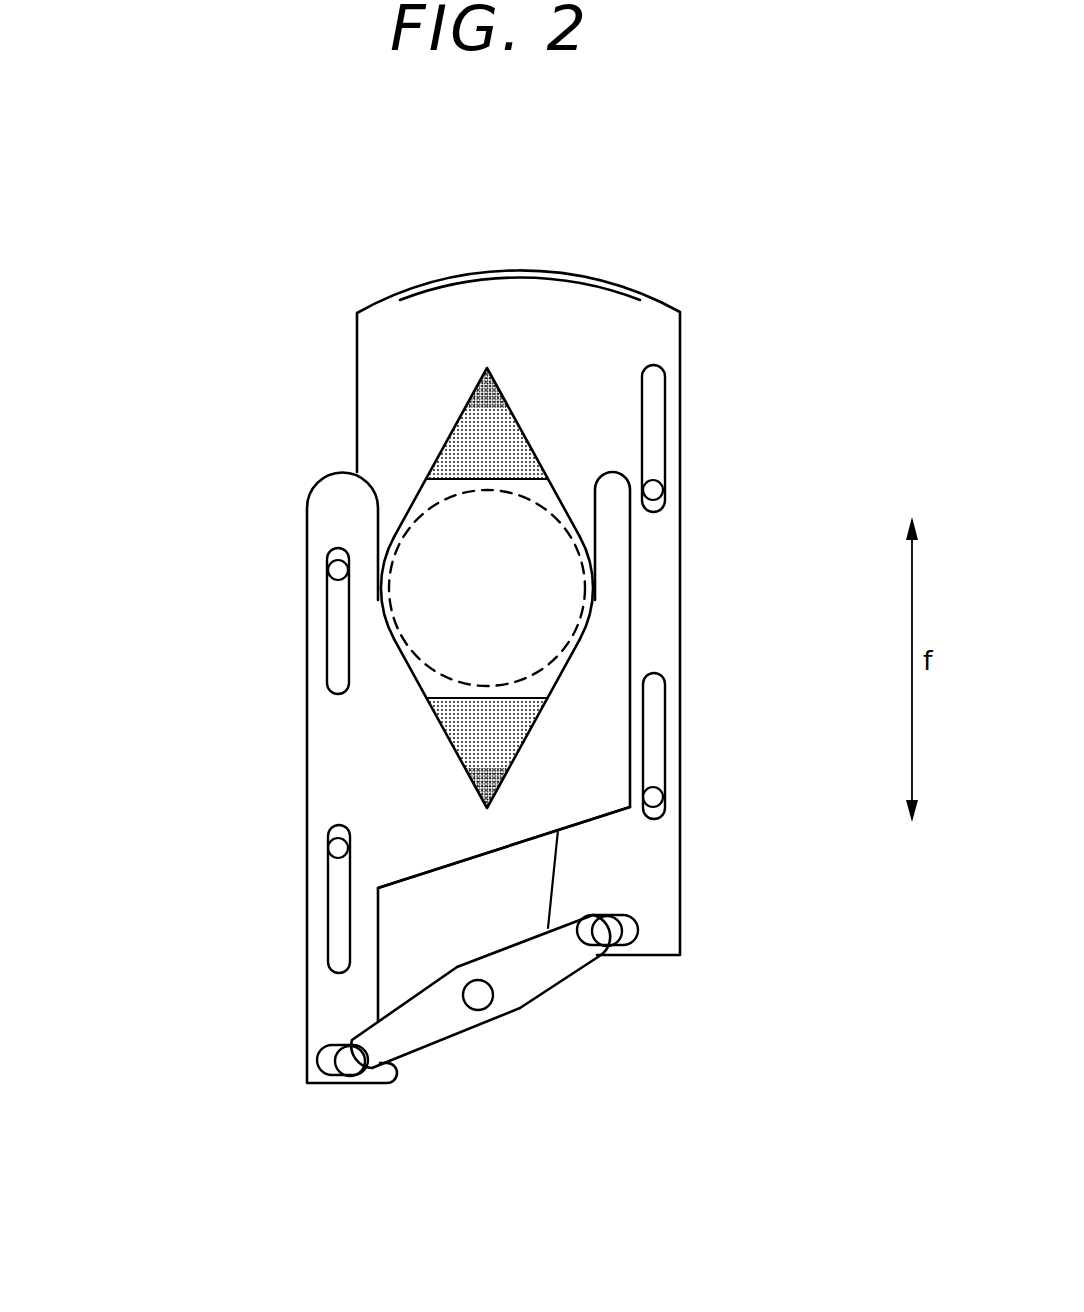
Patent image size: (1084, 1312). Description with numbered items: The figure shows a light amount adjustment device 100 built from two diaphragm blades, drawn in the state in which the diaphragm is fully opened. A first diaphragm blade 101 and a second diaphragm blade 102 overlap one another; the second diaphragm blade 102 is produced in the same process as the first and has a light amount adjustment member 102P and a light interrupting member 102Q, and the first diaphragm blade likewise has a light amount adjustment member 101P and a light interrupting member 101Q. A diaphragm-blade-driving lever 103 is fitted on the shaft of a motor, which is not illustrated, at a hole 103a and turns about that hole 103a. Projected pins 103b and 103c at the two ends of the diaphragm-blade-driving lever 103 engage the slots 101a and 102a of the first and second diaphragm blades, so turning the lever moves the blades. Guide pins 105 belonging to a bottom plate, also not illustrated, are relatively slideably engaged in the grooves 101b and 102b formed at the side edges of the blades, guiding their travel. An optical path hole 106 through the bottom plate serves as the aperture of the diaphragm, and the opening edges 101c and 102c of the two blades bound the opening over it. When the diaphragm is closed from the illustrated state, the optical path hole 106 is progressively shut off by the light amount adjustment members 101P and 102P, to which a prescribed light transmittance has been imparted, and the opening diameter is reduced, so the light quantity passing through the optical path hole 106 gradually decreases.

The light amount adjustment device 100 is at (245, 370).
The first diaphragm blade 101 is at (272, 978).
The slot of first diaphragm blade 101a is at (317, 1062).
The groove of first diaphragm blade 101b is at (324, 626).
The opening edge of first diaphragm blade 101c is at (470, 778).
The light amount adjustment member of first diaphragm blade 101P is at (455, 733).
The light interrupting member of first diaphragm blade 101Q is at (383, 803).
The second diaphragm blade 102 is at (658, 875).
The slot of second diaphragm blade 102a is at (637, 928).
The groove of second diaphragm blade 102b is at (667, 382).
The opening edge of second diaphragm blade 102c is at (507, 397).
The light amount adjustment member of second diaphragm blade 102P is at (518, 422).
The light interrupting member of second diaphragm blade 102Q is at (448, 298).
The diaphragm-blade-driving lever 103 is at (545, 973).
The hole of diaphragm-blade-driving lever 103a is at (478, 997).
The projected pin 103b is at (350, 1065).
The projected pin 103c is at (607, 932).
The guide pin 105 is at (655, 489).
The optical path hole 106 is at (592, 570).